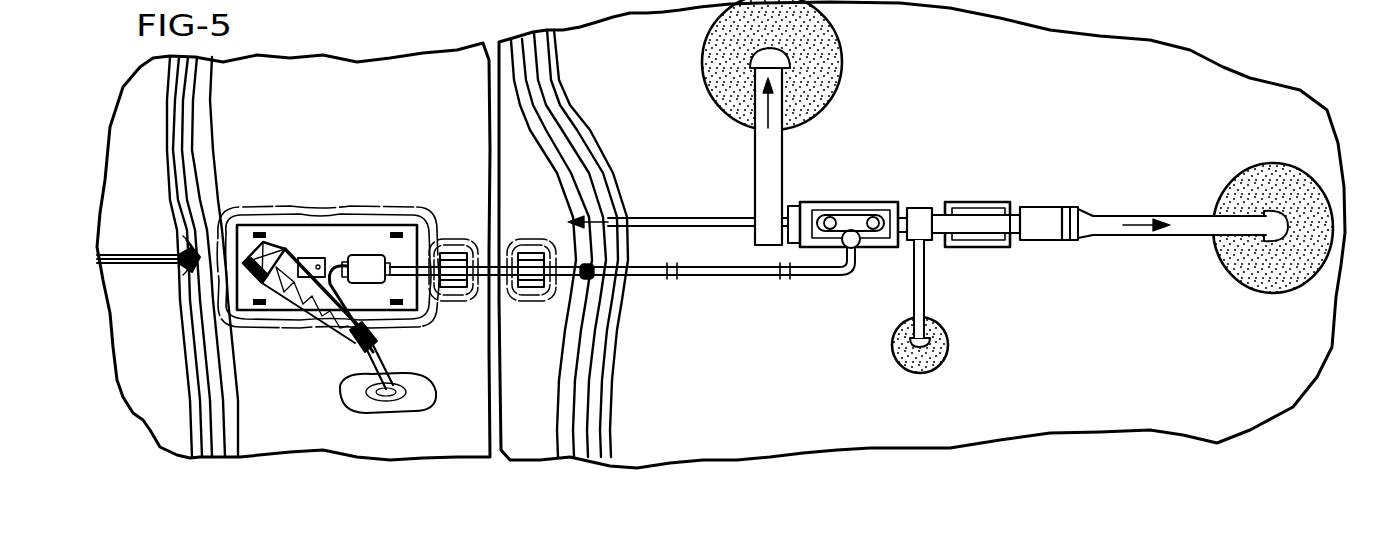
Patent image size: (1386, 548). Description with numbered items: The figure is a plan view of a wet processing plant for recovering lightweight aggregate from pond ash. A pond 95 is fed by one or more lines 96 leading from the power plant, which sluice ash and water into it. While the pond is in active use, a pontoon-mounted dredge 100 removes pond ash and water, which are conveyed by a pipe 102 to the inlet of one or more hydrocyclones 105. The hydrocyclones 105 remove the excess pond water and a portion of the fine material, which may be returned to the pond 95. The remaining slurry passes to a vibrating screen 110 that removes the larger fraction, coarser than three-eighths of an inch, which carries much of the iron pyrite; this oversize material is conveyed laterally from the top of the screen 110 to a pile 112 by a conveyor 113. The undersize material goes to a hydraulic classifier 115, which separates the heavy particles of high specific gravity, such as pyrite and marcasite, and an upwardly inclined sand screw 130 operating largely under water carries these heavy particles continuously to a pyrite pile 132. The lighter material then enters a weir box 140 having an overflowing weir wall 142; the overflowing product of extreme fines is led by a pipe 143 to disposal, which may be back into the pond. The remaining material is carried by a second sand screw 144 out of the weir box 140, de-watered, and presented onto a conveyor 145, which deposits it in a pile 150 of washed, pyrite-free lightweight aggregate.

The pond 95 is at (342, 142).
The lines 96 is at (142, 255).
The pontoon-mounted dredge 100 is at (346, 226).
The pipe 102 is at (498, 267).
The hydrocyclones 105 is at (877, 213).
The vibrating screen 110 is at (847, 226).
The pile 112 is at (827, 54).
The conveyor 113 is at (756, 157).
The hydraulic classifier 115 is at (920, 207).
The sand screw 130 is at (924, 293).
The pyrite pile 132 is at (941, 364).
The weir box 140 is at (995, 244).
The weir wall 142 is at (953, 243).
The pipe 143 is at (700, 218).
The second sand screw 144 is at (1040, 212).
The conveyor 145 is at (1194, 219).
The pile 150 is at (1281, 170).